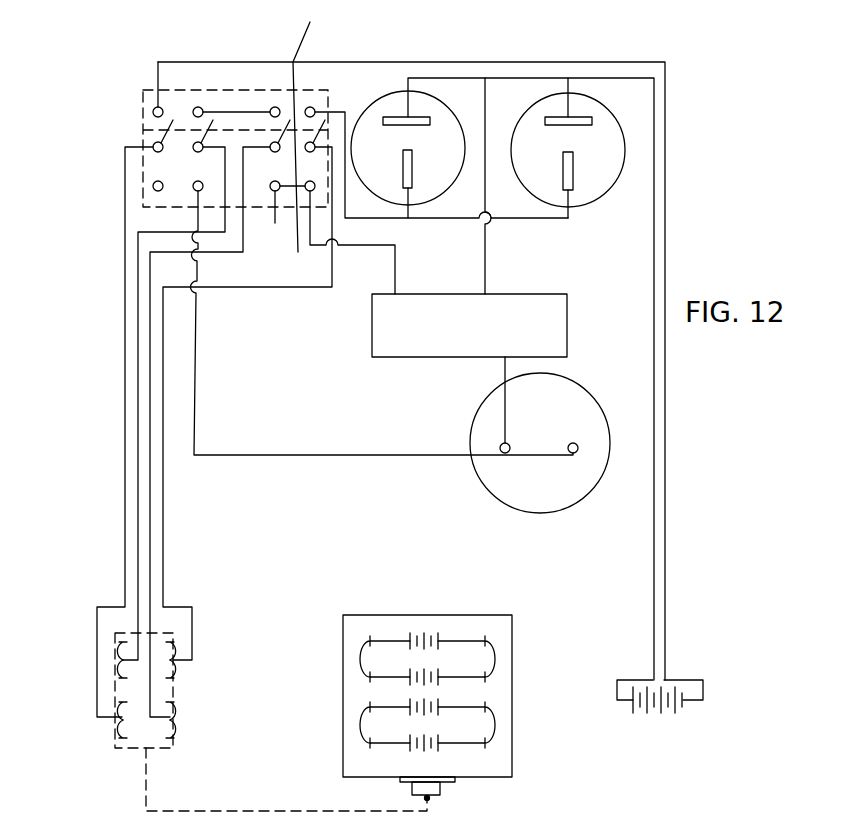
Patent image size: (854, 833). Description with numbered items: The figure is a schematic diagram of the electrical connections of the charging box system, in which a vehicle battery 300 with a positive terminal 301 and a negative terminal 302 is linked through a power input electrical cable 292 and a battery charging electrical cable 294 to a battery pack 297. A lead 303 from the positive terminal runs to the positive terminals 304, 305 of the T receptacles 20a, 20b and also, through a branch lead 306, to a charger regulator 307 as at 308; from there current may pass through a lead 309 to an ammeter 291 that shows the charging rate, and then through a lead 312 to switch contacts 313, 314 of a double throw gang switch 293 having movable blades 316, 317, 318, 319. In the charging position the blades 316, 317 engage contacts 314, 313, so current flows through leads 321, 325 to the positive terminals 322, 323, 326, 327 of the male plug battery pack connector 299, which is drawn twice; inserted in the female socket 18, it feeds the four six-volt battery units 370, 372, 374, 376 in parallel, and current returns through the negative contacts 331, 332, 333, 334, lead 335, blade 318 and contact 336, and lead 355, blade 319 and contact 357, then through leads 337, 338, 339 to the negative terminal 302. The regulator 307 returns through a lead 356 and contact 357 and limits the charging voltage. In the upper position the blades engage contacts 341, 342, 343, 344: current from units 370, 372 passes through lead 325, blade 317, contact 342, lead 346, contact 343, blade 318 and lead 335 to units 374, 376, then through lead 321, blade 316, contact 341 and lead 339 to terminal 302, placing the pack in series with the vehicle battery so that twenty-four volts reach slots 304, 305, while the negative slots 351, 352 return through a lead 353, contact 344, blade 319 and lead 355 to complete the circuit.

The power input electrical cable 292 is at (668, 548).
The lead 303 is at (652, 408).
The switch 293 is at (140, 103).
The switch contact 341 is at (155, 108).
The switch contact 342 is at (200, 108).
The lead 346 is at (228, 111).
The switch contact 343 is at (272, 108).
The switch contact 344 is at (310, 107).
The lead 338 is at (315, 126).
The switch blade 316 is at (157, 133).
The switch blade 317 is at (193, 133).
The switch blade 318 is at (277, 140).
The switch blade 319 is at (313, 143).
The switch contact 314 is at (153, 185).
The switch contact 313 is at (193, 188).
The switch contact 357 is at (313, 190).
The lead 321 is at (125, 340).
The lead 325 is at (137, 313).
The lead 335 is at (150, 395).
The lead 355 is at (163, 507).
The switch contact 336 is at (264, 244).
The lead 337 is at (292, 269).
The lead 312 is at (225, 455).
The lead 353 is at (445, 218).
The lead 356 is at (395, 262).
The connection point 308 is at (485, 280).
The branch lead 306 is at (487, 115).
The lead 339 is at (393, 62).
The T receptacle 20b is at (443, 100).
The positive terminal 305 is at (396, 117).
The negative slot 352 is at (411, 172).
The T receptacle 20a is at (592, 137).
The positive terminal 304 is at (580, 118).
The negative slot 351 is at (574, 163).
The charger regulator 307 is at (567, 303).
The lead 309 is at (503, 373).
The ammeter 291 is at (588, 498).
The battery charging electrical cable 294 is at (163, 570).
The male plug battery pack connector 299 is at (177, 746).
The positive terminal 327 is at (122, 645).
The positive terminal 326 is at (120, 675).
The positive terminal 322 is at (122, 705).
The positive terminal 323 is at (122, 733).
The negative contact 333 is at (166, 645).
The negative contact 334 is at (168, 675).
The negative contact 331 is at (168, 703).
The negative contact 332 is at (168, 735).
The battery pack 297 is at (456, 612).
The battery unit 370 is at (423, 636).
The battery unit 372 is at (432, 684).
The battery unit 374 is at (432, 698).
The battery unit 376 is at (408, 750).
The female socket 18 is at (400, 779).
The positive terminal 301 is at (633, 700).
The negative terminal 302 is at (685, 700).
The vehicle battery 300 is at (670, 716).